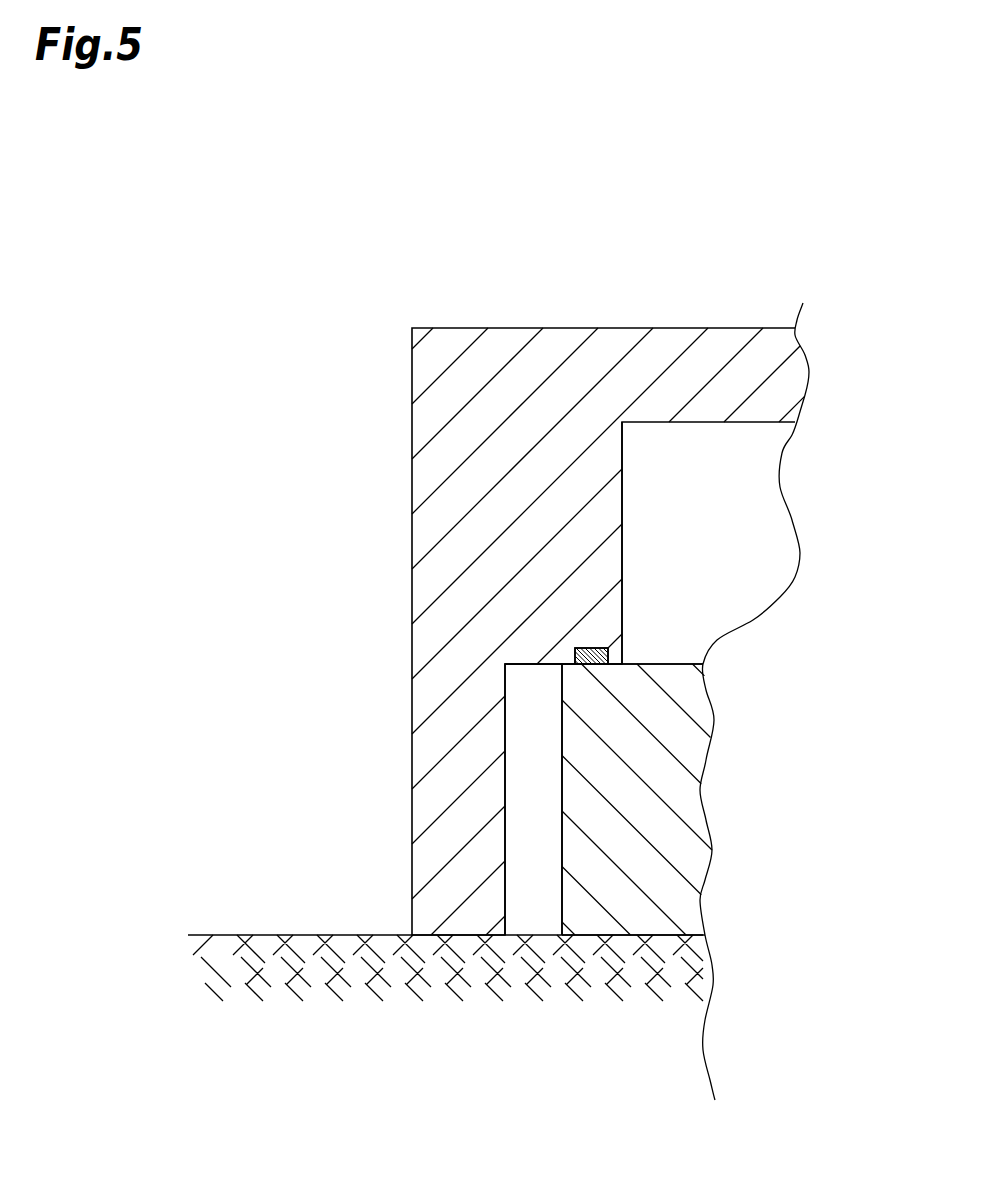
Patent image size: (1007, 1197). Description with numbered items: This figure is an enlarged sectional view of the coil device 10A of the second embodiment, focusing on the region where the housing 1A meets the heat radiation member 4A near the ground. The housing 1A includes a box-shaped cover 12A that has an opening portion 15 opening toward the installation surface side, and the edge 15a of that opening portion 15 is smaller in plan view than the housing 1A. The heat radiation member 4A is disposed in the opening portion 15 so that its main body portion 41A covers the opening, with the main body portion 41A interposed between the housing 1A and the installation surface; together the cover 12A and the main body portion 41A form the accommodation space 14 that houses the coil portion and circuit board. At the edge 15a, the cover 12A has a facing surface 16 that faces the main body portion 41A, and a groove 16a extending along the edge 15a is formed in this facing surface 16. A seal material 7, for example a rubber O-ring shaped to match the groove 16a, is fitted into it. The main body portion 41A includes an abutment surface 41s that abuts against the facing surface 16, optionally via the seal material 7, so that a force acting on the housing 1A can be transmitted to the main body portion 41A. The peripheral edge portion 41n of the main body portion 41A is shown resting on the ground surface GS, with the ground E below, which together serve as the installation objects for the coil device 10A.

The coil device 10A is at (276, 193).
The cover 12A is at (559, 328).
The housing 1A is at (608, 593).
The accommodation space 14 is at (755, 493).
The facing surface 16 is at (530, 666).
The groove 16a is at (587, 650).
The seal material 7 is at (590, 650).
The abutment surface 41s is at (618, 663).
The main body portion 41A is at (643, 917).
The heat radiation member 4A is at (637, 886).
The peripheral edge portion 41n is at (587, 946).
The edge 15a is at (533, 916).
The opening portion 15 is at (526, 886).
The ground surface GS is at (225, 935).
The ground E is at (180, 979).